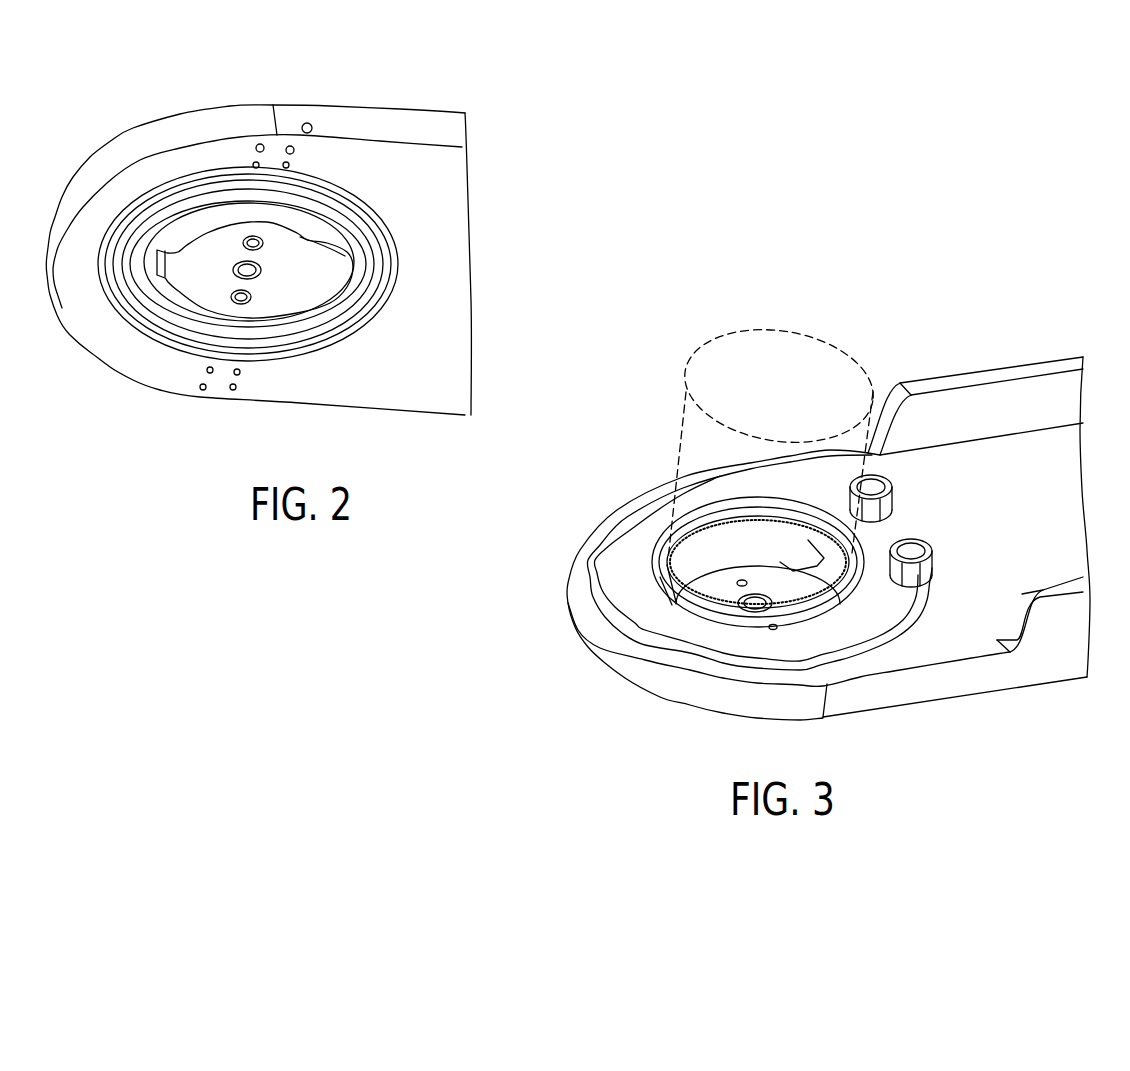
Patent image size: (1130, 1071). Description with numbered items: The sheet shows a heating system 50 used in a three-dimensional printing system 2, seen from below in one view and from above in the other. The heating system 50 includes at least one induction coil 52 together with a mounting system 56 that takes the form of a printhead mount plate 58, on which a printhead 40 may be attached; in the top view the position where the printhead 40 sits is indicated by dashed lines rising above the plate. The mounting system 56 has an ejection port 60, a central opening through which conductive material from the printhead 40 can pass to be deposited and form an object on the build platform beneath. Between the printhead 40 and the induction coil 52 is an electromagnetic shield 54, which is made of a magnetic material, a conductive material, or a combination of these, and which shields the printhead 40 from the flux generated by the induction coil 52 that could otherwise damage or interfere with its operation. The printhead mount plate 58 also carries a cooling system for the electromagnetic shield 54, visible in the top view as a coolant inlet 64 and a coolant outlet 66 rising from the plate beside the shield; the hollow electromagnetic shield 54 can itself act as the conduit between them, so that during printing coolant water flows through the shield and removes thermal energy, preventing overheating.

In FIG. 3, the three-dimensional printing system 2 is at (915, 292).
In FIG. 3, the printhead 40 is at (793, 352).
In FIG. 2, the heating system 50 is at (500, 154).
In FIG. 3, the heating system 50 is at (538, 583).
In FIG. 2, the induction coil 52 is at (383, 236).
In FIG. 2, the electromagnetic shield 54 is at (198, 345).
In FIG. 3, the electromagnetic shield 54 is at (650, 540).
In FIG. 2, the mounting system 56 is at (92, 345).
In FIG. 3, the mounting system 56 is at (580, 627).
In FIG. 2, the printhead mount plate 58 is at (455, 363).
In FIG. 3, the printhead mount plate 58 is at (1012, 577).
In FIG. 2, the ejection port 60 is at (245, 272).
In FIG. 3, the ejection port 60 is at (755, 600).
In FIG. 3, the coolant inlet 64 is at (893, 490).
In FIG. 3, the coolant outlet 66 is at (933, 548).